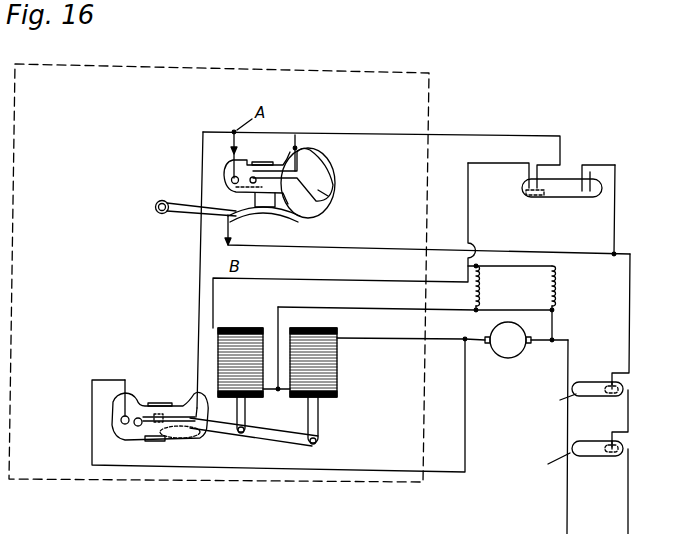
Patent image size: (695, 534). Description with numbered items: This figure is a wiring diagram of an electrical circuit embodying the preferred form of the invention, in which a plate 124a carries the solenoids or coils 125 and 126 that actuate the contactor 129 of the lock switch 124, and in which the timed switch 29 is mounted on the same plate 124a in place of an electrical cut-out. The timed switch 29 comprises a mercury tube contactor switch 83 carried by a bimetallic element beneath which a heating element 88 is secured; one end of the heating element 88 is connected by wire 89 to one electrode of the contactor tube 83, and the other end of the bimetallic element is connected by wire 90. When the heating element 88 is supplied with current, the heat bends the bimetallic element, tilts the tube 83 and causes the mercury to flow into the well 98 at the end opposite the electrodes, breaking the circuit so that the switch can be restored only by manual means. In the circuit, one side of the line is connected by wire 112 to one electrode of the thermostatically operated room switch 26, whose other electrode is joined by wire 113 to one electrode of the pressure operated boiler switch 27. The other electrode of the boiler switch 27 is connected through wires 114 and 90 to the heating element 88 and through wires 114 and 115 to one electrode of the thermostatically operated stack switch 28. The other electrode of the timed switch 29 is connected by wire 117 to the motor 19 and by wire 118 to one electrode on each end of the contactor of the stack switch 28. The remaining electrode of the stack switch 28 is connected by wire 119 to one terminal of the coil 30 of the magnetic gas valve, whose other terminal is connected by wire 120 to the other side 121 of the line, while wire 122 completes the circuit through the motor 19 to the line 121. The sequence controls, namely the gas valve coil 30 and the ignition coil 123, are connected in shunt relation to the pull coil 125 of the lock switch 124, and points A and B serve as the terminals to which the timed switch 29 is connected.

The plate 124a is at (430, 93).
The wire 118 is at (473, 128).
The wire 117 is at (200, 267).
The wire 119 is at (497, 158).
The stack switch 28 is at (566, 177).
The wire 115 is at (612, 234).
The wire 90 is at (233, 237).
The timed switch 29 is at (338, 182).
The wire 89 is at (316, 218).
The mercury tube contactor switch 83 is at (316, 173).
The well 98 is at (326, 196).
The heating element 88 is at (241, 217).
The ignition coil 123 is at (473, 289).
The coil of the magnetic valve 30 is at (574, 282).
The wire 120 is at (553, 322).
The motor 19 is at (490, 332).
The wire 122 is at (540, 343).
The wire 114 is at (628, 356).
The boiler switch 27 is at (570, 388).
The wire 113 is at (626, 418).
The room switch 26 is at (568, 447).
The wire 112 is at (626, 475).
The other side of the line 121 is at (567, 491).
The lock switch 124 is at (284, 372).
The pull coil 125 is at (252, 326).
The coil 126 is at (338, 353).
The contactor 129 is at (158, 400).